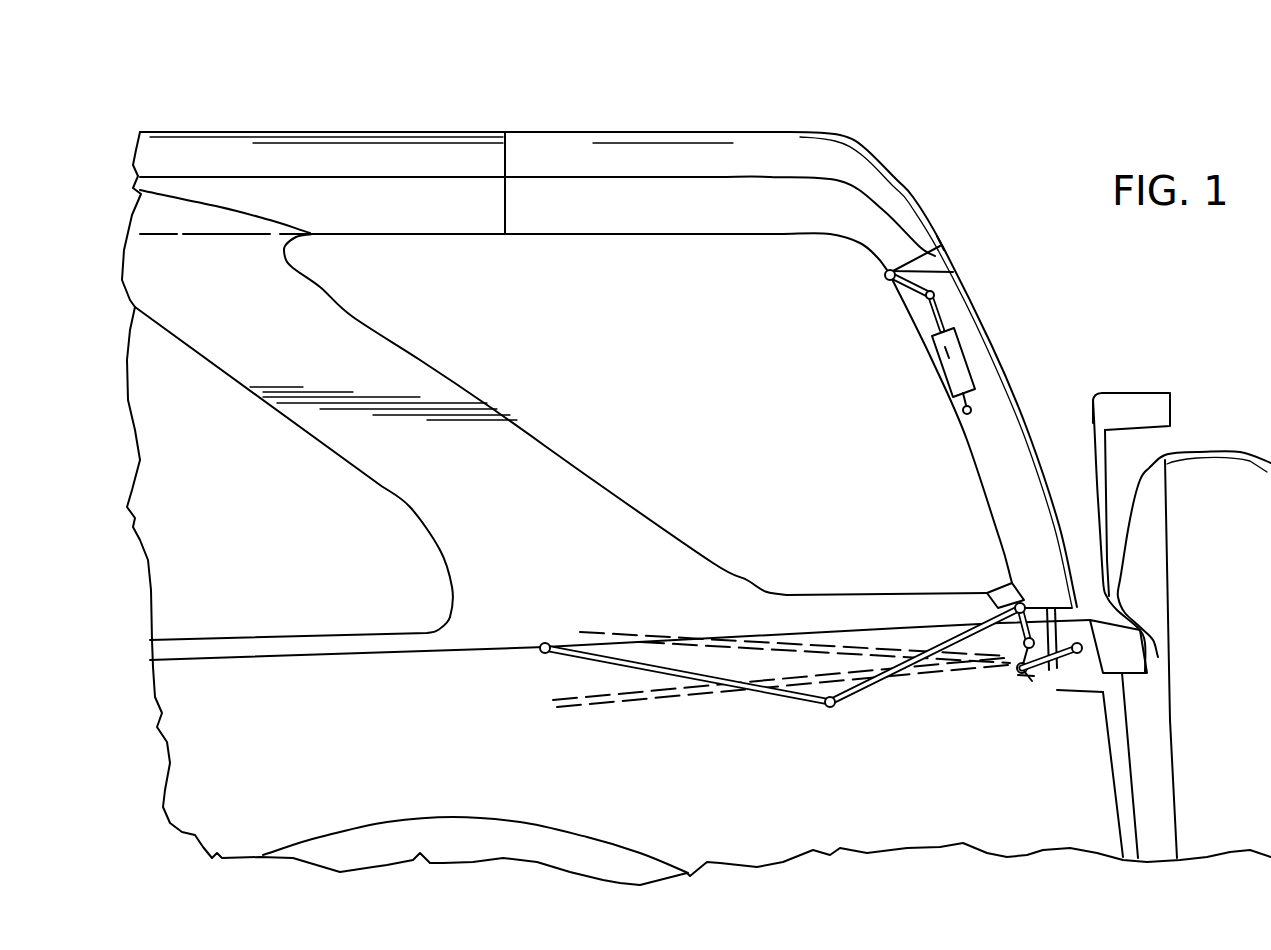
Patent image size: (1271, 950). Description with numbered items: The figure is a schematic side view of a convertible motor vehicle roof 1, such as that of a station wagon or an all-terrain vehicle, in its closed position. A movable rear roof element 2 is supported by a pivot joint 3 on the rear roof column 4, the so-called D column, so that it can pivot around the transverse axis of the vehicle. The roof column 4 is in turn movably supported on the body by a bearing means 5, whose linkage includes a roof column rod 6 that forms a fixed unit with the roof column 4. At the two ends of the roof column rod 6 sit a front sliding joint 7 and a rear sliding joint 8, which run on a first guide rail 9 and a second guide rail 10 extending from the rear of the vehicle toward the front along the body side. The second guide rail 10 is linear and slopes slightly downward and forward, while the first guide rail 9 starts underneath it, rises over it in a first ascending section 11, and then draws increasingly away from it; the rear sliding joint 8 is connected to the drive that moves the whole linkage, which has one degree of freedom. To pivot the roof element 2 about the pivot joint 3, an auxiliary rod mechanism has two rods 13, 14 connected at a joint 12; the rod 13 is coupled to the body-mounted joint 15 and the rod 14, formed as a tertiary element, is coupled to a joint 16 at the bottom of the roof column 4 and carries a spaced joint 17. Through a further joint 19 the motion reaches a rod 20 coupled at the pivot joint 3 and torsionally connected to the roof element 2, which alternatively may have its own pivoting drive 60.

The motor vehicle roof 1 is at (922, 140).
The rear roof element 2 is at (788, 157).
The pivot joint 3 is at (883, 283).
The rear roof column 4 is at (983, 383).
The bearing means 5 is at (984, 668).
The roof column rod 6 is at (1077, 654).
The front sliding joint 7 is at (1068, 689).
The rear sliding joint 8 is at (1103, 693).
The first guide rail 9 is at (818, 643).
The second guide rail 10 is at (687, 693).
The first ascending section 11 is at (1000, 664).
The joint 12 is at (830, 707).
The rod 13 is at (777, 692).
The rod 14 is at (876, 683).
The body-mounted joint 15 is at (545, 654).
The joint 16 is at (1006, 606).
The joint 17 is at (1020, 675).
The joint 19 is at (945, 277).
The rod 20 is at (912, 293).
The pivoting drive 60 is at (933, 362).